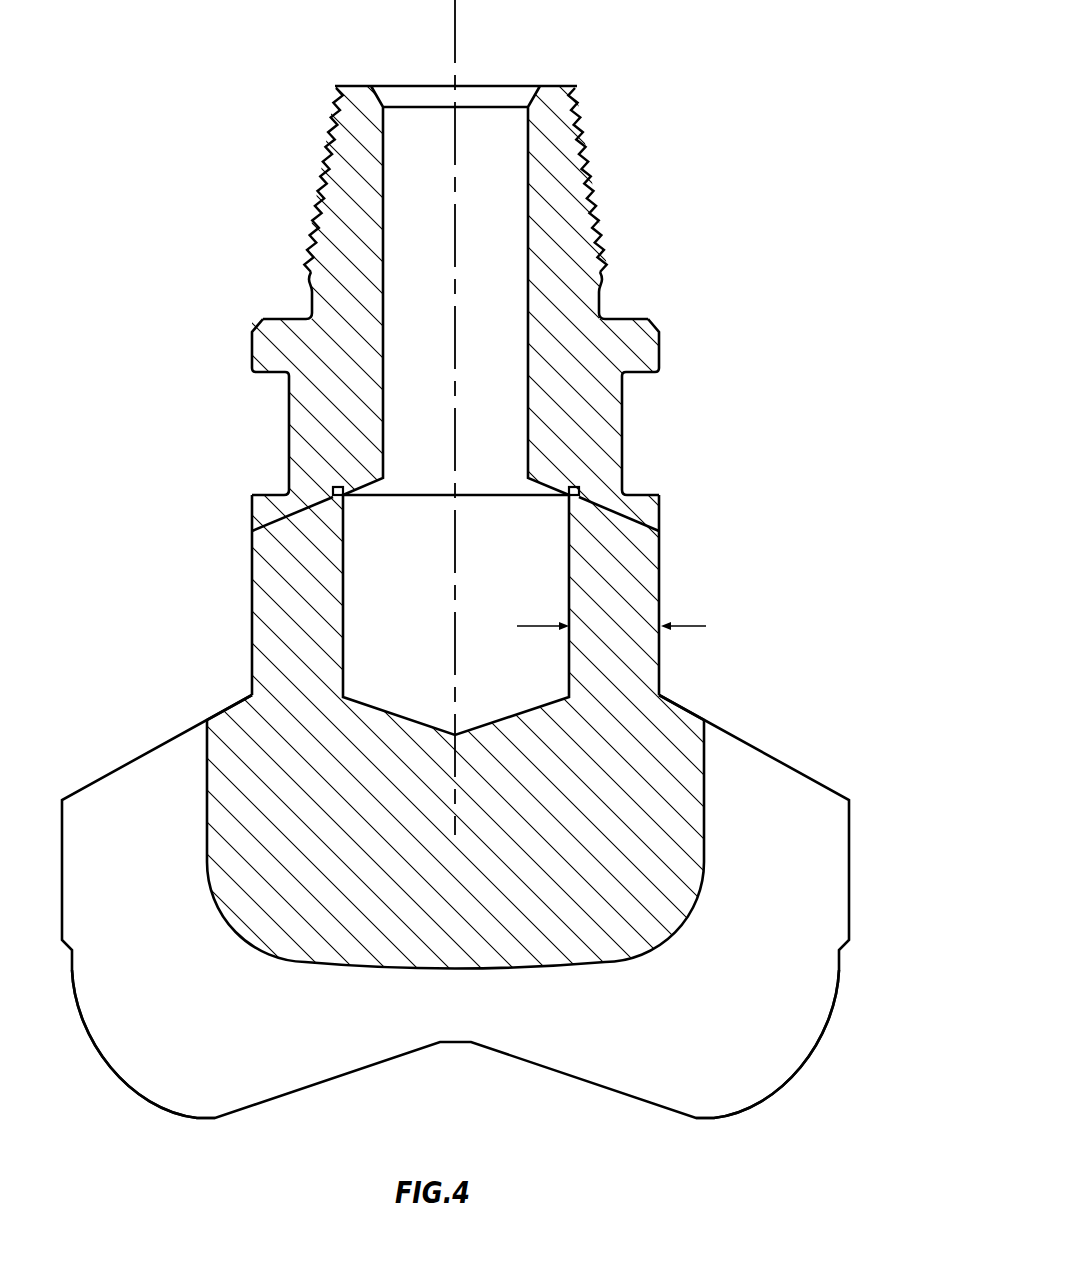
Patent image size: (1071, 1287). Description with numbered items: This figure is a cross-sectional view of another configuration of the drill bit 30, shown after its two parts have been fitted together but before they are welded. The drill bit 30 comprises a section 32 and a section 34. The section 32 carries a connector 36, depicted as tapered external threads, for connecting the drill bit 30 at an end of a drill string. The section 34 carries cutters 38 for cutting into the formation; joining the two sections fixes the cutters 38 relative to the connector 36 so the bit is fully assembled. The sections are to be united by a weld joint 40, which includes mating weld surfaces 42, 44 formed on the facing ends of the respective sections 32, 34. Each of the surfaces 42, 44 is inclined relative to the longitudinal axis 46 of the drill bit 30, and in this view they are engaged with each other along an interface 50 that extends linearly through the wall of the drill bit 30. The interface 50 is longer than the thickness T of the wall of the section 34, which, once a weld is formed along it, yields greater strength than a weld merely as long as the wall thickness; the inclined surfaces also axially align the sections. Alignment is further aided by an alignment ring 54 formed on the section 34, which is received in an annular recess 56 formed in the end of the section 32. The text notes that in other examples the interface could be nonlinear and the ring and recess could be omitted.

The drill bit 30 is at (677, 82).
The section 32 is at (247, 350).
The section 34 is at (249, 630).
The connector 36 is at (590, 173).
The cutters 38 is at (197, 1118).
The weld joint 40 is at (680, 530).
The weld surface 42 is at (305, 510).
The weld surface 44 is at (278, 522).
The longitudinal axis 46 is at (457, 65).
The interface 50 is at (632, 512).
The alignment ring 54 is at (337, 487).
The annular recess 56 is at (572, 497).
The thickness T is at (624, 627).